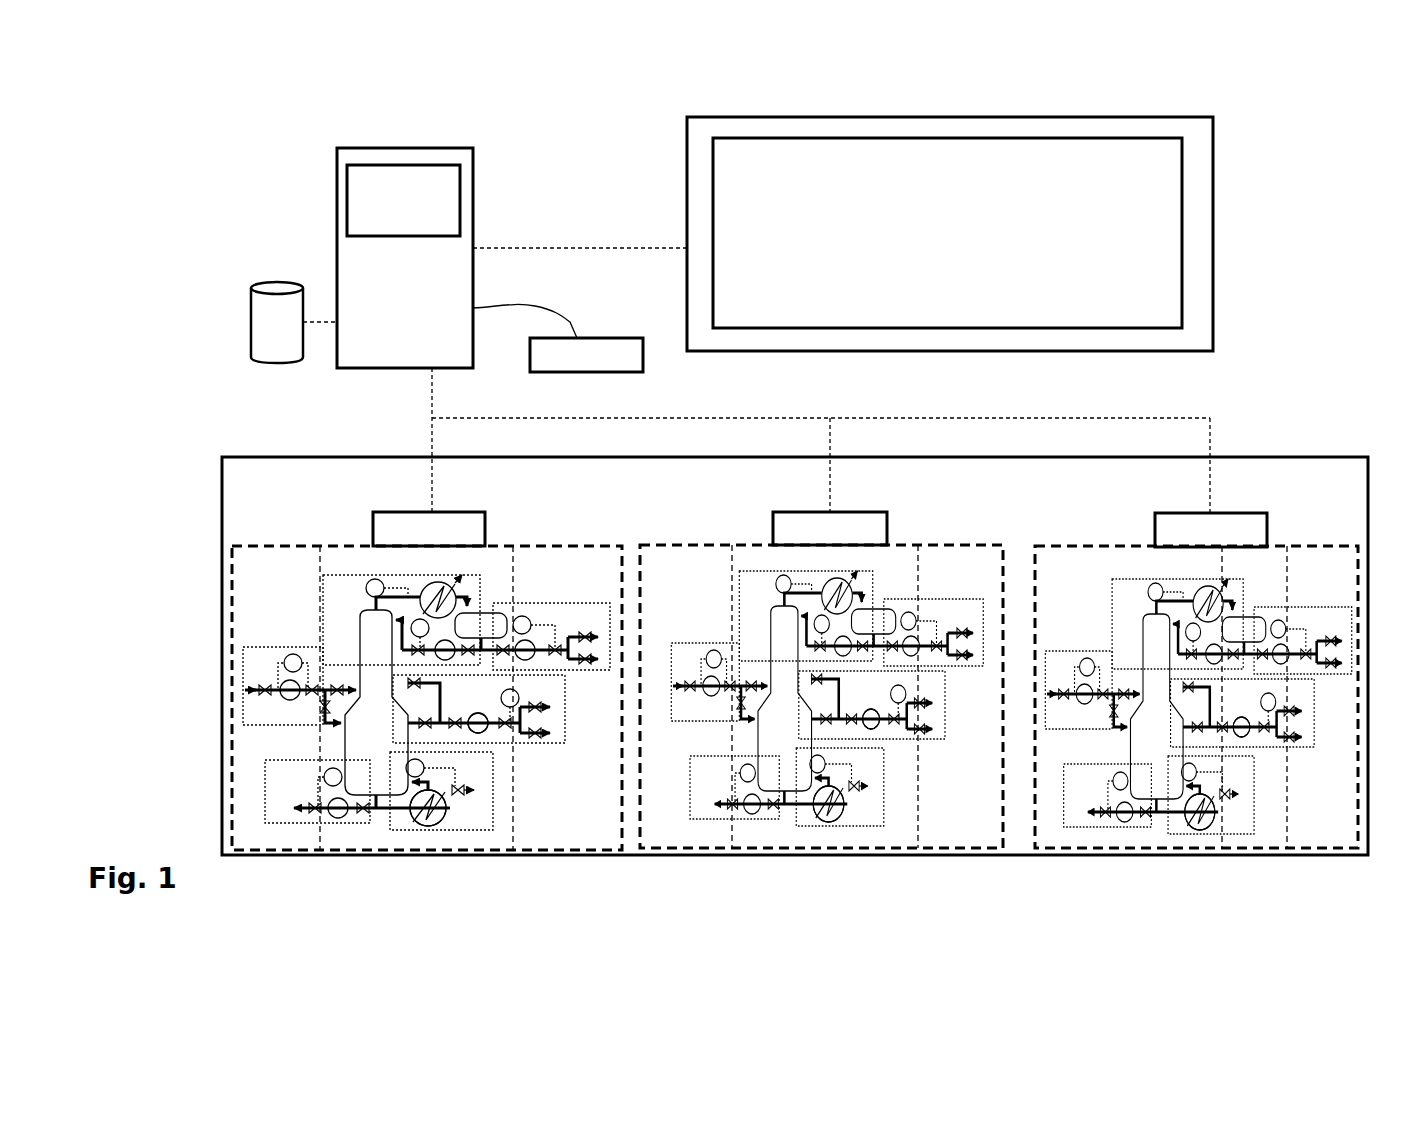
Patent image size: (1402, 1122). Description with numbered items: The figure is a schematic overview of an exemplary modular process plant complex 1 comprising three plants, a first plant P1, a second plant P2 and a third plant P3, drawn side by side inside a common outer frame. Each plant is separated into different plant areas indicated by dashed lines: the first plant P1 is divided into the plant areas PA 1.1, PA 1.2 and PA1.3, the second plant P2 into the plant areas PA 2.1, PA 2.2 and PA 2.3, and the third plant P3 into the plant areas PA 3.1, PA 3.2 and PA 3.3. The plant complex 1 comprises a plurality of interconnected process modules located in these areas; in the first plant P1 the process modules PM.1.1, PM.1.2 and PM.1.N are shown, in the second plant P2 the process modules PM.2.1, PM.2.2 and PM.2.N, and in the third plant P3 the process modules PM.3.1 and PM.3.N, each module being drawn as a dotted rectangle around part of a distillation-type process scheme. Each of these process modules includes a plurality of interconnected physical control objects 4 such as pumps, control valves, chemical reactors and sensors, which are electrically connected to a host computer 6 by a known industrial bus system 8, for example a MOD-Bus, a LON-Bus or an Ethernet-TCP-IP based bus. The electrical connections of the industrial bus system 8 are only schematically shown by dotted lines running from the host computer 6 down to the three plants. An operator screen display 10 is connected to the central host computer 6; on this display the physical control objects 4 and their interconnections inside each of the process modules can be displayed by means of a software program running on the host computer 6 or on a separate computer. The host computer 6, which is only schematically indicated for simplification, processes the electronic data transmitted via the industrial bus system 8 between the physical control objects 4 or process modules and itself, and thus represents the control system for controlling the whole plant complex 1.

The modular process plant complex 1 is at (1268, 435).
The physical control objects 4 is at (447, 805).
The host computer 6 is at (447, 260).
The industrial bus system 8 is at (742, 418).
The operator screen display 10 is at (1215, 210).
The first plant P1 is at (535, 523).
The second plant P2 is at (958, 535).
The third plant P3 is at (1332, 532).
The plant area PA 1.1 is at (268, 560).
The plant area PA 1.2 is at (363, 560).
The plant area PA1.3 is at (548, 568).
The plant area PA 2.1 is at (676, 542).
The plant area PA 2.2 is at (764, 540).
The plant area PA 2.3 is at (938, 545).
The plant area PA 3.1 is at (1062, 533).
The plant area PA 3.2 is at (1270, 563).
The plant area PA 3.3 is at (1342, 810).
The process module PM.1.1 is at (247, 673).
The process module PM.1.2 is at (323, 608).
The process module PM.1.N is at (262, 787).
The process module PM.2.1 is at (740, 590).
The process module PM.2.2 is at (700, 705).
The process module PM.2.N is at (700, 797).
The process module PM.3.1 is at (1128, 613).
The process module PM.3.N is at (1173, 832).